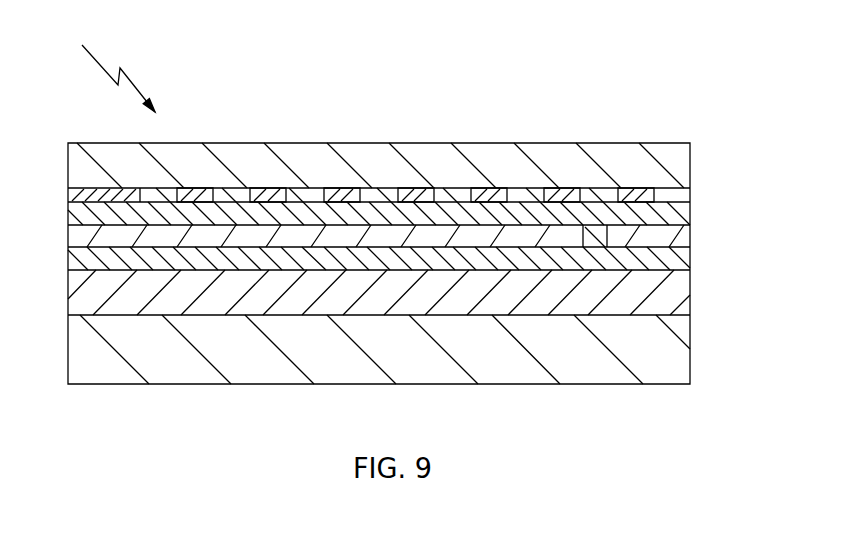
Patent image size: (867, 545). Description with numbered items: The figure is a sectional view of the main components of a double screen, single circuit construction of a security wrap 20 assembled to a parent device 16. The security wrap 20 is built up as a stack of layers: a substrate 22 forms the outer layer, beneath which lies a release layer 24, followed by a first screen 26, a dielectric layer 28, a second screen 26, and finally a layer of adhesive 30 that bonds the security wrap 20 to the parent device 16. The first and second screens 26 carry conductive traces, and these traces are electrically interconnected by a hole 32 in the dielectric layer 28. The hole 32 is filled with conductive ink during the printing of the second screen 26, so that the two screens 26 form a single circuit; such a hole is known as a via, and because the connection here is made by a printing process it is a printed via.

The security wrap 20 is at (106, 61).
The substrate 22 is at (675, 165).
The release layer 24 is at (692, 195).
The screen 26 is at (692, 215).
The dielectric layer 28 is at (692, 237).
The layer of adhesive 30 is at (680, 298).
The parent device 16 is at (677, 358).
The hole 32 is at (593, 238).